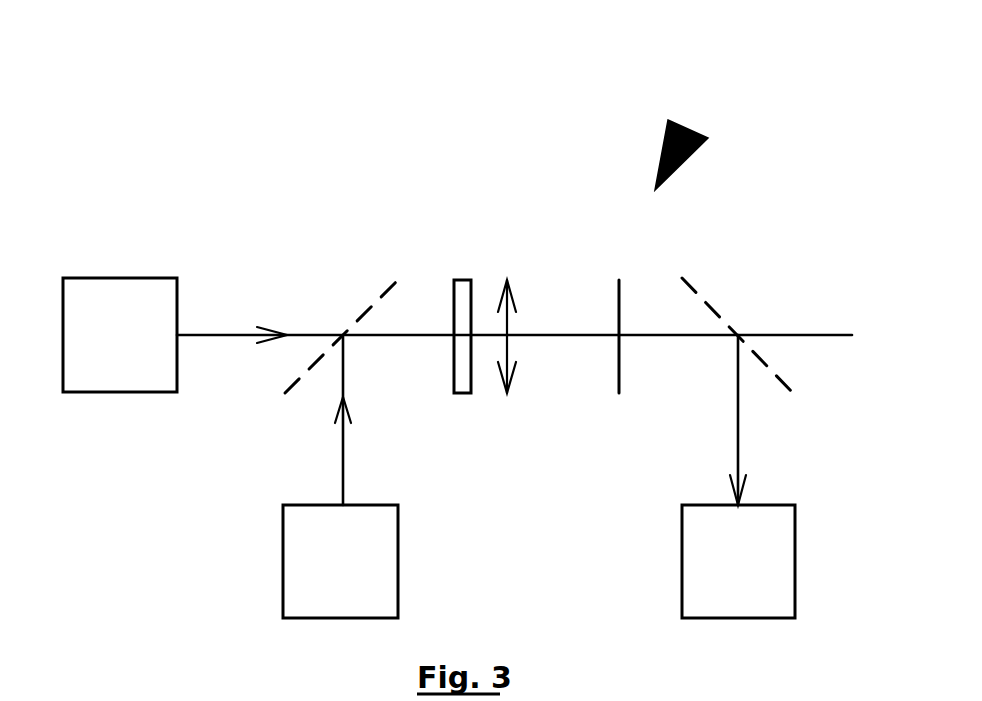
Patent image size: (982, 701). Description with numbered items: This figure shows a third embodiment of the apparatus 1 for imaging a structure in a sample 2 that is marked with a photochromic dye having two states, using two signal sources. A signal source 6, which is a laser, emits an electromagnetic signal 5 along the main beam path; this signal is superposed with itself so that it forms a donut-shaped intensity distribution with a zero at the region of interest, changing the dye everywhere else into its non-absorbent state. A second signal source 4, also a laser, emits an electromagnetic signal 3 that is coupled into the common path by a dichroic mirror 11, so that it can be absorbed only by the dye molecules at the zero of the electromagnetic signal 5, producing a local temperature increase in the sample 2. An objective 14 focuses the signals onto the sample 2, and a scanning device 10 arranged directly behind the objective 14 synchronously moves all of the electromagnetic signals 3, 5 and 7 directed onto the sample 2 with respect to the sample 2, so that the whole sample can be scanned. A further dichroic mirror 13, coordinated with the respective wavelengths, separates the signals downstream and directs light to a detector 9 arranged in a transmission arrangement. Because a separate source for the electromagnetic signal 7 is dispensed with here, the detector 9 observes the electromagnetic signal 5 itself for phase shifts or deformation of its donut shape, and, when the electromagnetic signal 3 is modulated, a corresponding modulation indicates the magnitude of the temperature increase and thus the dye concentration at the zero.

The apparatus 1 is at (690, 127).
The sample 2 is at (623, 303).
The electromagnetic signal 3 is at (343, 448).
The signal source 4 is at (283, 587).
The electromagnetic signal 5 is at (212, 333).
The signal source 6 is at (140, 278).
The electromagnetic signal 7 is at (230, 338).
The detector 9 is at (682, 587).
The scanning device 10 is at (463, 393).
The dichroic mirror 11 is at (370, 307).
The dichroic mirror 13 is at (712, 307).
The objective 14 is at (521, 252).